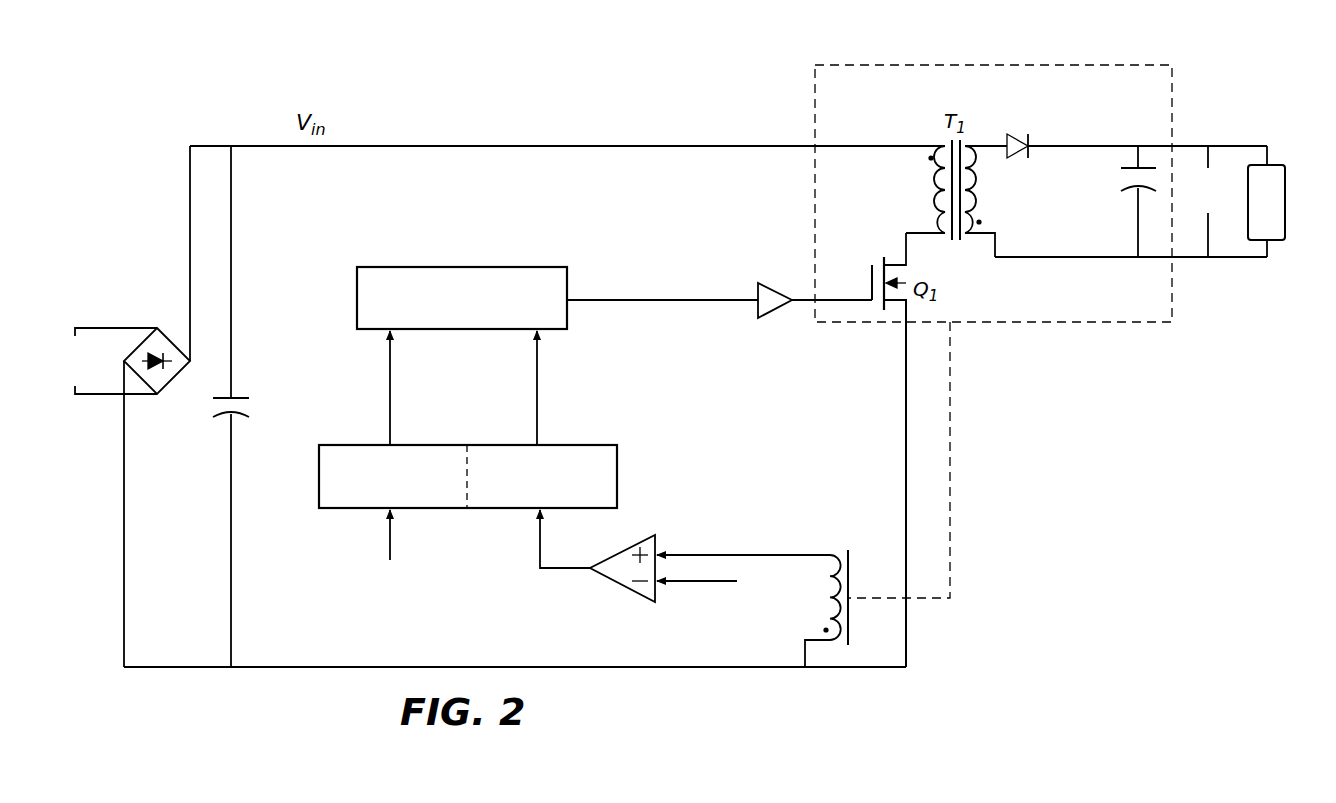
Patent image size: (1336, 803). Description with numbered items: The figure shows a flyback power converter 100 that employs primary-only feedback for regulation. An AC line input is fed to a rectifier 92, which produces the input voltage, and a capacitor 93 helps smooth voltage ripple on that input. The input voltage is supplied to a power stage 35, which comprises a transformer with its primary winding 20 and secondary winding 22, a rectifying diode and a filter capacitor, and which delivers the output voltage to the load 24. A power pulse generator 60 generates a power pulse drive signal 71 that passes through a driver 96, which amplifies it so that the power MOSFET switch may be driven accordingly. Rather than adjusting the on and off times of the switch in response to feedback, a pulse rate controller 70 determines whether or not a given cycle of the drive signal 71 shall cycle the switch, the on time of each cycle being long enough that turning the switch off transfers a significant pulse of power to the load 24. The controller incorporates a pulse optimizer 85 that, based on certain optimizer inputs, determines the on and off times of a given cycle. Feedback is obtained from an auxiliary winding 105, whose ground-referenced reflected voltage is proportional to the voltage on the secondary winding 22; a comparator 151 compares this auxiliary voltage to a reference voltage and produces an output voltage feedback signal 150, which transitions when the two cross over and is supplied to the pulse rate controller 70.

The flyback power converter 100 is at (478, 76).
The rectifier 92 is at (135, 290).
The capacitor 93 is at (215, 400).
The power pulse generator 60 is at (447, 266).
The power pulse drive signal 71 is at (602, 299).
The driver 96 is at (772, 282).
The primary winding 20 is at (940, 145).
The secondary winding 22 is at (970, 145).
The power stage 35 is at (1146, 63).
The load 24 is at (1286, 206).
The pulse optimizer 85 is at (368, 444).
The pulse rate controller 70 is at (618, 478).
The output voltage feedback signal 150 is at (540, 557).
The comparator 151 is at (626, 550).
The auxiliary winding 105 is at (822, 554).